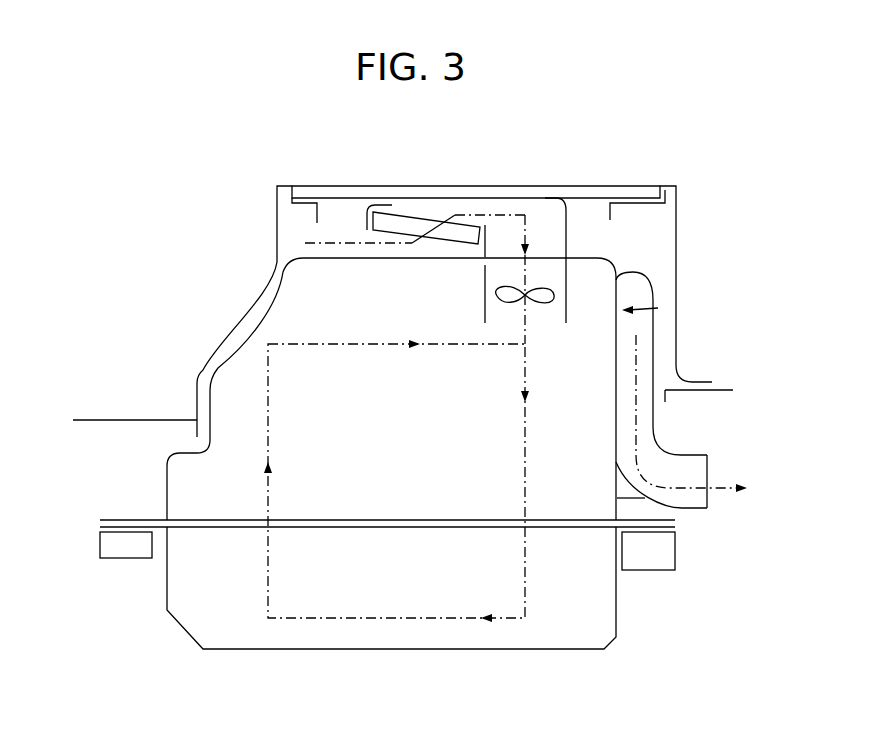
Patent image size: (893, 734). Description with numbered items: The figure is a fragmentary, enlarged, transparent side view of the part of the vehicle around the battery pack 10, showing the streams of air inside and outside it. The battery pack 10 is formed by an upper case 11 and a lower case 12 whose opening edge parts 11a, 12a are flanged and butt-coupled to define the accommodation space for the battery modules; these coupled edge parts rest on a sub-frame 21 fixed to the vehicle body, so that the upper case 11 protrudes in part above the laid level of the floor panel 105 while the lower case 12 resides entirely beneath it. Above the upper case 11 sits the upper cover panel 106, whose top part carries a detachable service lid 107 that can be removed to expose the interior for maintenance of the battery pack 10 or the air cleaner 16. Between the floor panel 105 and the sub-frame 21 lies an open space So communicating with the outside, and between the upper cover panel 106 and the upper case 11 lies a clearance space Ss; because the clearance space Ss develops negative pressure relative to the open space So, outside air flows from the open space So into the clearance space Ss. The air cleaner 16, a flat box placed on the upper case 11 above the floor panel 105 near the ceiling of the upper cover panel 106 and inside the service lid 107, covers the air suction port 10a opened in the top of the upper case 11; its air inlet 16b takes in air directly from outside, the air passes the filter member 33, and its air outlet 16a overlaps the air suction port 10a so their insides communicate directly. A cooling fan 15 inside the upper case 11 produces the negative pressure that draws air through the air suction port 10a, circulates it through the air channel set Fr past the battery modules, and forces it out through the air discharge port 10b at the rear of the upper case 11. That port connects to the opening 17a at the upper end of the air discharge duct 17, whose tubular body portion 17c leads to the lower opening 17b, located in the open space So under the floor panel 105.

The battery pack 10 is at (410, 454).
The air suction port 10a is at (556, 283).
The air discharge port 10b is at (658, 308).
The upper case 11 is at (199, 370).
The opening edge part 11a is at (117, 519).
The lower case 12 is at (183, 630).
The opening edge part 12a is at (115, 529).
The cooling fan 15 is at (553, 296).
The air cleaner 16 is at (568, 228).
The air outlet 16a is at (548, 236).
The air inlet 16b is at (357, 235).
The air discharge duct 17 is at (690, 455).
The opening 17a is at (653, 283).
The opening 17b is at (690, 510).
The tubular body portion 17c is at (655, 368).
The sub-frame 21 is at (98, 550).
The filter member 33 is at (398, 222).
The floor panel 105 is at (92, 420).
The upper cover panel 106 is at (272, 275).
The service lid 107 is at (458, 185).
The air channel set Fr is at (525, 578).
The open space So is at (137, 481).
The clearance space Ss is at (238, 322).